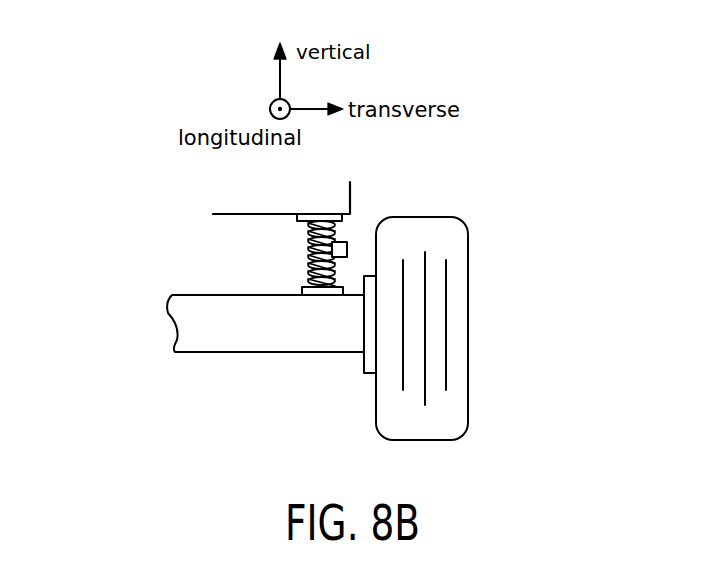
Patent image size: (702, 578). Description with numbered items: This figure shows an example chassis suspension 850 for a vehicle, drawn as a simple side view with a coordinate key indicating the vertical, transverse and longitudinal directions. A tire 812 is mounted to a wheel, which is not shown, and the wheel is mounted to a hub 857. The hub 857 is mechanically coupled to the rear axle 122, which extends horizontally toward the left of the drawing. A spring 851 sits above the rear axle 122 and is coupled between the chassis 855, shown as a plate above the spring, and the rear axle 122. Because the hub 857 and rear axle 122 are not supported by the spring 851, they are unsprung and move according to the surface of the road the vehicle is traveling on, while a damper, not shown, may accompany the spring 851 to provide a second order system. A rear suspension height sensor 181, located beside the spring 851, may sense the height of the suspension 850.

The chassis suspension 850 is at (150, 193).
The chassis 855 is at (351, 196).
The spring 851 is at (307, 247).
The rear suspension height sensor 181 is at (348, 250).
The hub 857 is at (372, 375).
The tire 812 is at (469, 248).
The rear axle 122 is at (250, 353).